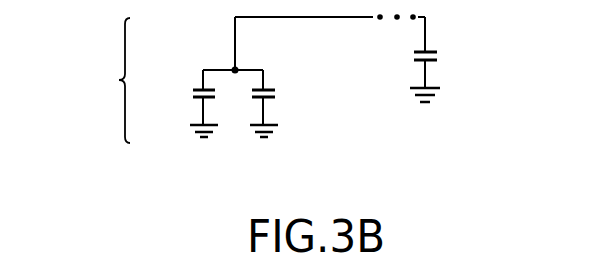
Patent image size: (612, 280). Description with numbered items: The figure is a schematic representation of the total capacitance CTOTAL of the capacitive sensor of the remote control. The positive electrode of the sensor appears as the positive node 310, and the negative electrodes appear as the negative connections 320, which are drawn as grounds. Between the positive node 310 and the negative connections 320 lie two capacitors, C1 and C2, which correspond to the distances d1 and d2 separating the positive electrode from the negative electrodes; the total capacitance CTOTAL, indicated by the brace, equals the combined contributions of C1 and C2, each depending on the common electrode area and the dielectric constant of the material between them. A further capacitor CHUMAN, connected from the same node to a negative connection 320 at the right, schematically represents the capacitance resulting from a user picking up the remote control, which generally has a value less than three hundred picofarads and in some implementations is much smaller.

The positive electrode 310 is at (215, 69).
The negative electrode 320 is at (203, 110).
The capacitance C1 is at (190, 97).
The capacitance C2 is at (277, 97).
The capacitor CHUMAN is at (471, 52).
The total capacitance CTOTAL is at (85, 80).